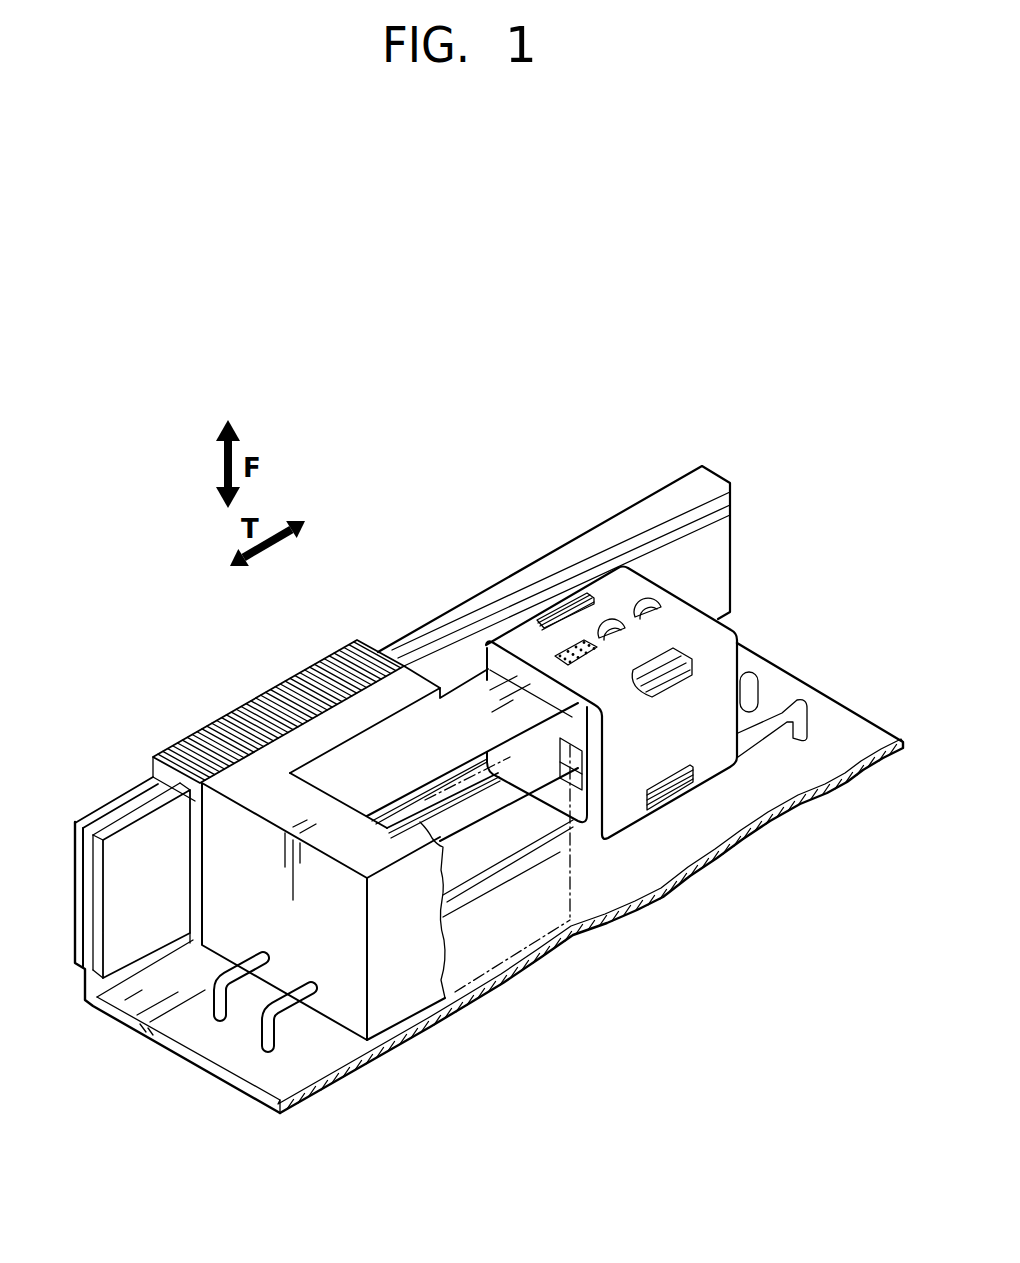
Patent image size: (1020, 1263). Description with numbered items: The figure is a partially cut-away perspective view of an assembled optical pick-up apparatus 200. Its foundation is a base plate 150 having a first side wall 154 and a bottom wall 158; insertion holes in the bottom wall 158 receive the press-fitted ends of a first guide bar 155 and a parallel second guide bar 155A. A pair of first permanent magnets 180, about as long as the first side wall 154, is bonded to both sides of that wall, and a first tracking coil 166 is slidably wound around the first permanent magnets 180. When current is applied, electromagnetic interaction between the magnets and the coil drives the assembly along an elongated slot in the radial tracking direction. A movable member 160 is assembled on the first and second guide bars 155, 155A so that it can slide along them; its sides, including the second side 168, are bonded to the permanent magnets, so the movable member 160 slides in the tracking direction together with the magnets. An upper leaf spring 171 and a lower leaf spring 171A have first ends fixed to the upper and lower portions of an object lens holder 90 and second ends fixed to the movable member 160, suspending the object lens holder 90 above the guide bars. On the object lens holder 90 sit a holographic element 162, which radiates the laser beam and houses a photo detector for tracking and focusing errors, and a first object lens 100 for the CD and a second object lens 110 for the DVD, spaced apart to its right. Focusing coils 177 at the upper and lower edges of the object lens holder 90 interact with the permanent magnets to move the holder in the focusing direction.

The optical pick-up apparatus 200 is at (491, 298).
The object lens holder 90 is at (682, 620).
The first object lens 100 is at (631, 661).
The second object lens 110 is at (647, 607).
The holographic element 162 is at (573, 646).
The upper leaf spring 171 is at (477, 710).
The lower leaf spring 171A is at (477, 858).
The first tracking coil 166 is at (260, 693).
The second side of movable member 168 is at (405, 995).
The first permanent magnets 180 is at (138, 865).
The first side wall 154 is at (92, 892).
The bottom wall 158 is at (140, 990).
The base plate 150 is at (150, 980).
The first guide bar 155 is at (222, 1000).
The second guide bar 155A is at (270, 1028).
The focusing coils 177 is at (672, 688).
The movable member 160 is at (422, 1070).